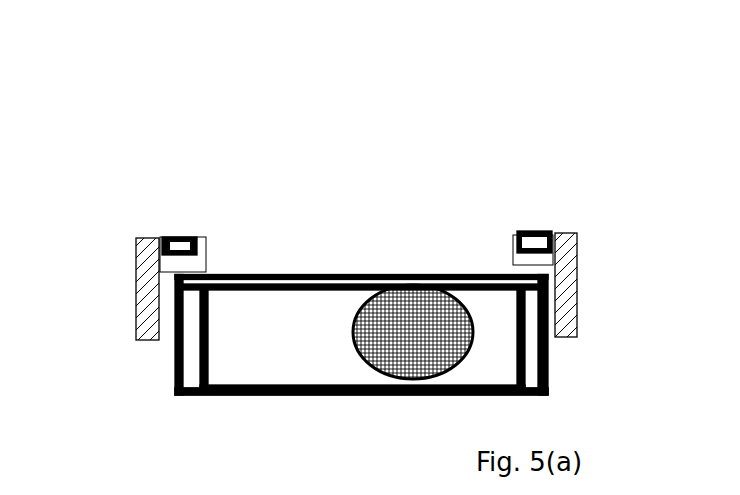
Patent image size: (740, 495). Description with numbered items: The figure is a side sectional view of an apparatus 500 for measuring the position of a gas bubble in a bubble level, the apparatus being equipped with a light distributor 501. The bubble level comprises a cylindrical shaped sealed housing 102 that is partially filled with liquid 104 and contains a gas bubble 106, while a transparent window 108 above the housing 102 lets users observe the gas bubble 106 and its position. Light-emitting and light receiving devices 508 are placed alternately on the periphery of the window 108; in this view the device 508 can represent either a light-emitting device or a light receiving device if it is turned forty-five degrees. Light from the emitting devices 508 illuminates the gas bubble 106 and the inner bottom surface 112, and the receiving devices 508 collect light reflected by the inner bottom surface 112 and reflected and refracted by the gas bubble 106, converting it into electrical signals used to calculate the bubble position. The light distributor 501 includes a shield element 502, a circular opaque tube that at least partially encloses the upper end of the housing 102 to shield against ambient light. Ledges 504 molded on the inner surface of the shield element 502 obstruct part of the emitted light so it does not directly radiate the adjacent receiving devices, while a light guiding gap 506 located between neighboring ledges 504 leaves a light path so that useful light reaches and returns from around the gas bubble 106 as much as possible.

The apparatus 500 is at (346, 226).
The light distributor 501 is at (92, 197).
The cylindrical shaped sealed housing 102 is at (534, 358).
The liquid 104 is at (265, 350).
The gas bubble 106 is at (428, 312).
The transparent window 108 is at (369, 275).
The inner bottom surface 112 is at (357, 395).
The shield element 502 is at (138, 263).
The ledge 504 is at (208, 243).
The light guiding gap 506 is at (190, 265).
The light-emitting device or light receiving device 508 is at (180, 237).